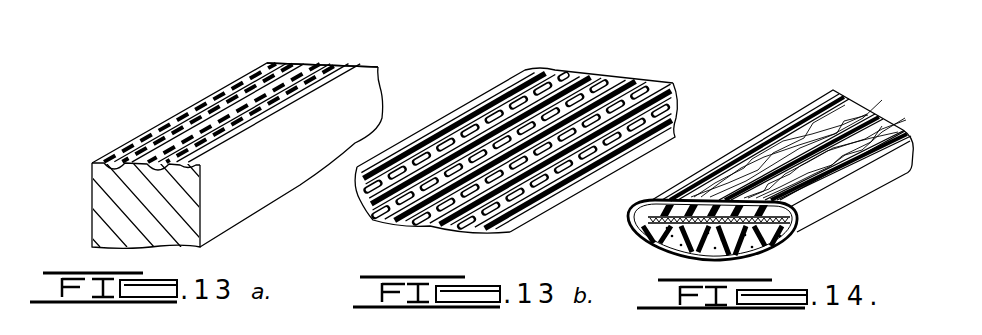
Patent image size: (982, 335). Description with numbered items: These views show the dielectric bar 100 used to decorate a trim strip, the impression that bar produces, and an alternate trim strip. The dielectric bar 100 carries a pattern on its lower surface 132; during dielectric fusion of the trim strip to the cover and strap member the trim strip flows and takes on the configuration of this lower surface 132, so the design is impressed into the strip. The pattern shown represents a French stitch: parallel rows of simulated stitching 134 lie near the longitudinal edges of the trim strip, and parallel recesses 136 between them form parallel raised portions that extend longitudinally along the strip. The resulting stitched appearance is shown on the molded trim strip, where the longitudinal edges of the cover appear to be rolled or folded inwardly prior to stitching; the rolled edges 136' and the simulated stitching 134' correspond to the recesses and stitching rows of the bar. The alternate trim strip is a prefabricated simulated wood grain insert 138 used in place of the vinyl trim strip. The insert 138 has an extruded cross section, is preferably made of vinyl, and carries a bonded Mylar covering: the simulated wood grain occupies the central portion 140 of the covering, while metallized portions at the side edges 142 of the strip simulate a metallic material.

In FIG. 13A, the dielectric bar 100 is at (88, 201).
In FIG. 13A, the lower surface 132 is at (245, 108).
In FIG. 13A, the rows of simulated stitching 134 is at (264, 110).
In FIG. 13A, the parallel recesses 136 is at (322, 42).
In FIG. 13B, the simulated stitching 134' is at (526, 130).
In FIG. 13B, the rolled edges 136' is at (524, 142).
In FIG. 14, the simulated wood grain insert 138 is at (767, 160).
In FIG. 14, the central portion 140 is at (860, 108).
In FIG. 14, the side edges 142 is at (820, 98).